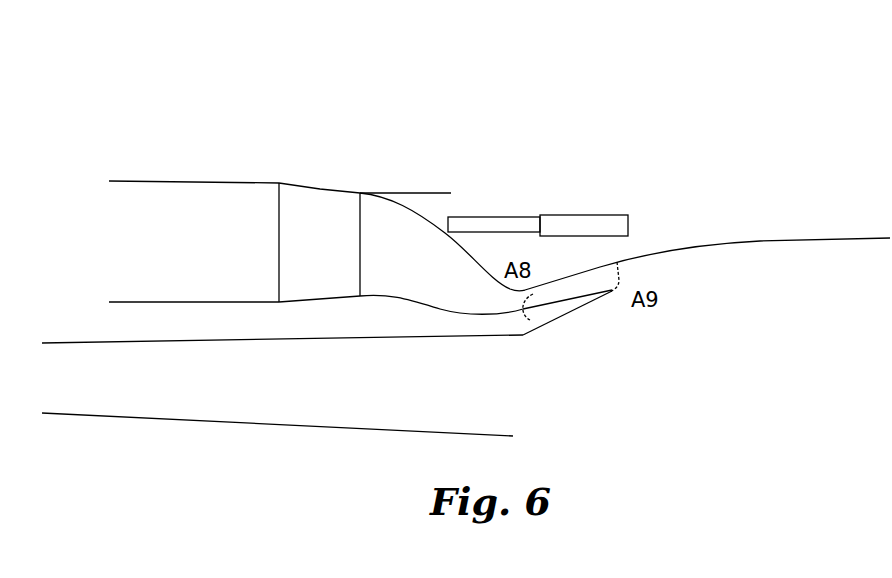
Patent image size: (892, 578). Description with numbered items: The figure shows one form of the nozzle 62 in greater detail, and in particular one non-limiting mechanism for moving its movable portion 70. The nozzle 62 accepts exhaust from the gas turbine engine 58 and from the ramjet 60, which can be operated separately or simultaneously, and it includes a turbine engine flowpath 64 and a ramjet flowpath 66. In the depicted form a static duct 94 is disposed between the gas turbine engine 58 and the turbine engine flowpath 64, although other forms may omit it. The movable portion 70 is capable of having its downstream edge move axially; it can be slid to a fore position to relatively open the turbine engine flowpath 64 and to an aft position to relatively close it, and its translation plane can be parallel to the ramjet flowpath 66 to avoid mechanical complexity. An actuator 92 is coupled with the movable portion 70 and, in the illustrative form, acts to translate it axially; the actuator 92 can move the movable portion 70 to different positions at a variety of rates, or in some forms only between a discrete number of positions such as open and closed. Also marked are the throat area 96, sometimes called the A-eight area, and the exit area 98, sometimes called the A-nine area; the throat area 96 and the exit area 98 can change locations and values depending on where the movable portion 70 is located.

The gas turbine engine 58 is at (167, 208).
The static duct 94 is at (336, 156).
The turbine engine flowpath 64 is at (388, 222).
The nozzle 62 is at (462, 88).
The actuator 92 is at (564, 174).
The movable portion 70 is at (680, 248).
The throat area 96 is at (527, 317).
The exit area 98 is at (612, 293).
The ramjet 60 is at (117, 389).
The ramjet flowpath 66 is at (238, 402).